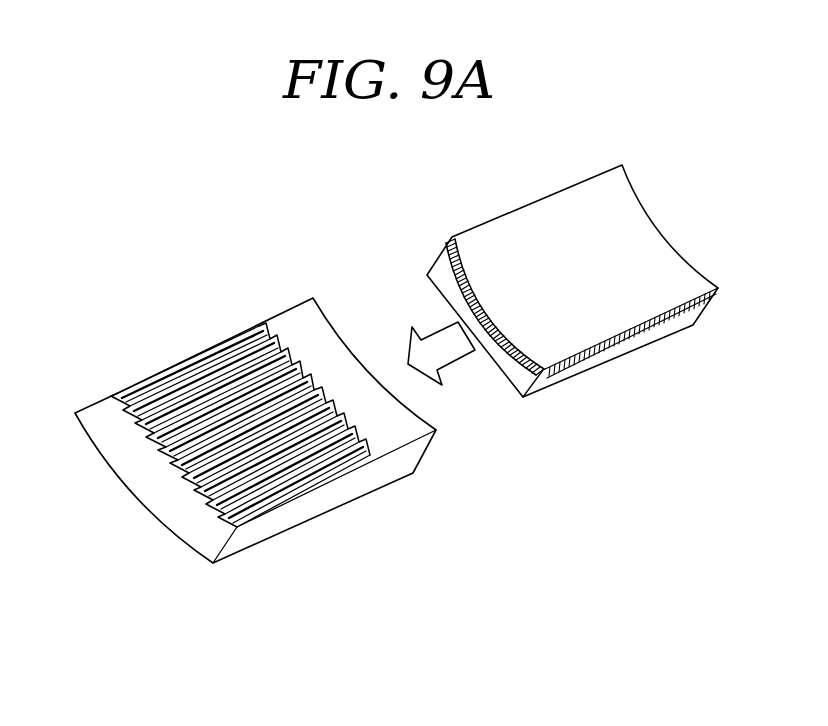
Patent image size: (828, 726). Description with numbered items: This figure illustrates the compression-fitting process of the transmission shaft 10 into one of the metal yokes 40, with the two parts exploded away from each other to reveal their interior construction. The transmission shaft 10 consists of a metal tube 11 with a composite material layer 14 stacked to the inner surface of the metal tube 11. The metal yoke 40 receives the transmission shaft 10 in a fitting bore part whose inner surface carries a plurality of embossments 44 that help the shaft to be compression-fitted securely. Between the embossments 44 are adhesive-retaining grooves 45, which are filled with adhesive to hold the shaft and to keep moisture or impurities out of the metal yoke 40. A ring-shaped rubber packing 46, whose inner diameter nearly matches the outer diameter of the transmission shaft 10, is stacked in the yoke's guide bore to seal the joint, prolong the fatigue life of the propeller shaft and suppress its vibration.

The metal yoke 40 is at (233, 400).
The embossments 44 is at (131, 386).
The adhesive-retaining grooves 45 is at (114, 407).
The rubber packing 46 is at (297, 320).
The transmission shaft 10 is at (572, 326).
The metal tube 11 is at (563, 373).
The composite material layer 14 is at (442, 240).